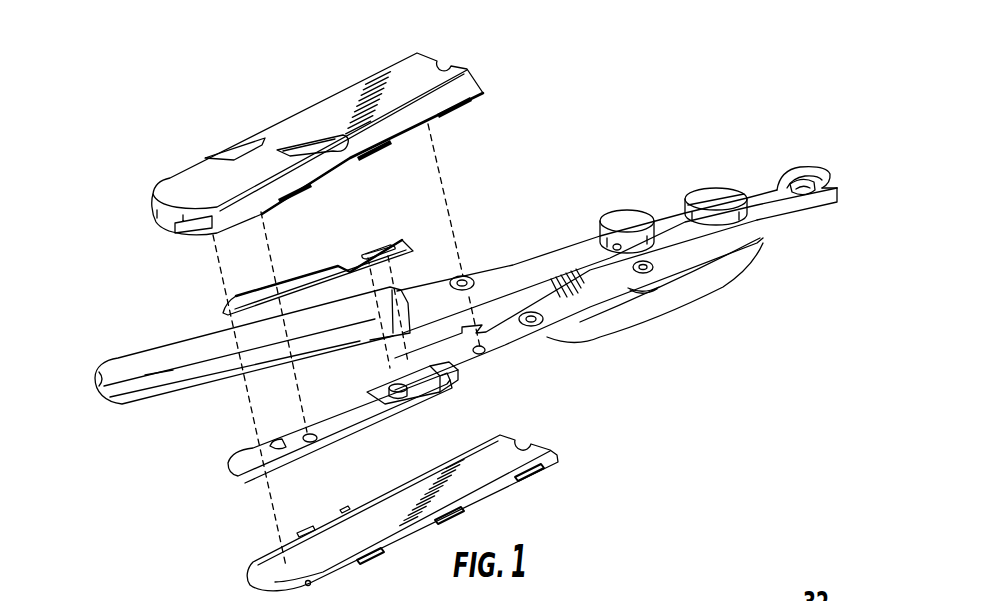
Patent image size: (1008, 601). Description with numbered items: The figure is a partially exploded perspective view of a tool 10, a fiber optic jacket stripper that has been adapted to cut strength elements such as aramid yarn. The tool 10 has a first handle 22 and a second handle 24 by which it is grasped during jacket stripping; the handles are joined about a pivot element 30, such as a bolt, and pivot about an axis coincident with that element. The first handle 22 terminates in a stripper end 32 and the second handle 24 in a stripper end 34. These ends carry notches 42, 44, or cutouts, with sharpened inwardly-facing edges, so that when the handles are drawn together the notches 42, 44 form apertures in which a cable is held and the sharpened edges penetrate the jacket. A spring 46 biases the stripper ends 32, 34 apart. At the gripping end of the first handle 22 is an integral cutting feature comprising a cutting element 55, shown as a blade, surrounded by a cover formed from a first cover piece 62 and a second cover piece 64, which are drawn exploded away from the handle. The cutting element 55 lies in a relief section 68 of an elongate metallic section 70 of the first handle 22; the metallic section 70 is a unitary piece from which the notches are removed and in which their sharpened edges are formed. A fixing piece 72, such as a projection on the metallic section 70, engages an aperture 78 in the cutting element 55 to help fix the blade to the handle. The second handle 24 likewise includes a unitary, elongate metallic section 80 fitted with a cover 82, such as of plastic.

The tool 10 is at (699, 95).
The first handle 22 is at (583, 300).
The second handle 24 is at (513, 265).
The pivot element 30 is at (722, 192).
The stripper end 32 is at (814, 162).
The stripper end 34 is at (843, 204).
The notch 42 is at (805, 190).
The notch 44 is at (838, 194).
The spring 46 is at (742, 272).
The cutting element 55 is at (338, 260).
The first cover piece 62 is at (410, 57).
The second cover piece 64 is at (478, 478).
The relief section 68 is at (455, 390).
The metallic section 70 is at (513, 345).
The fixing piece 72 is at (407, 396).
The aperture 78 is at (392, 250).
The metallic section 80 is at (567, 253).
The cover 82 is at (99, 383).